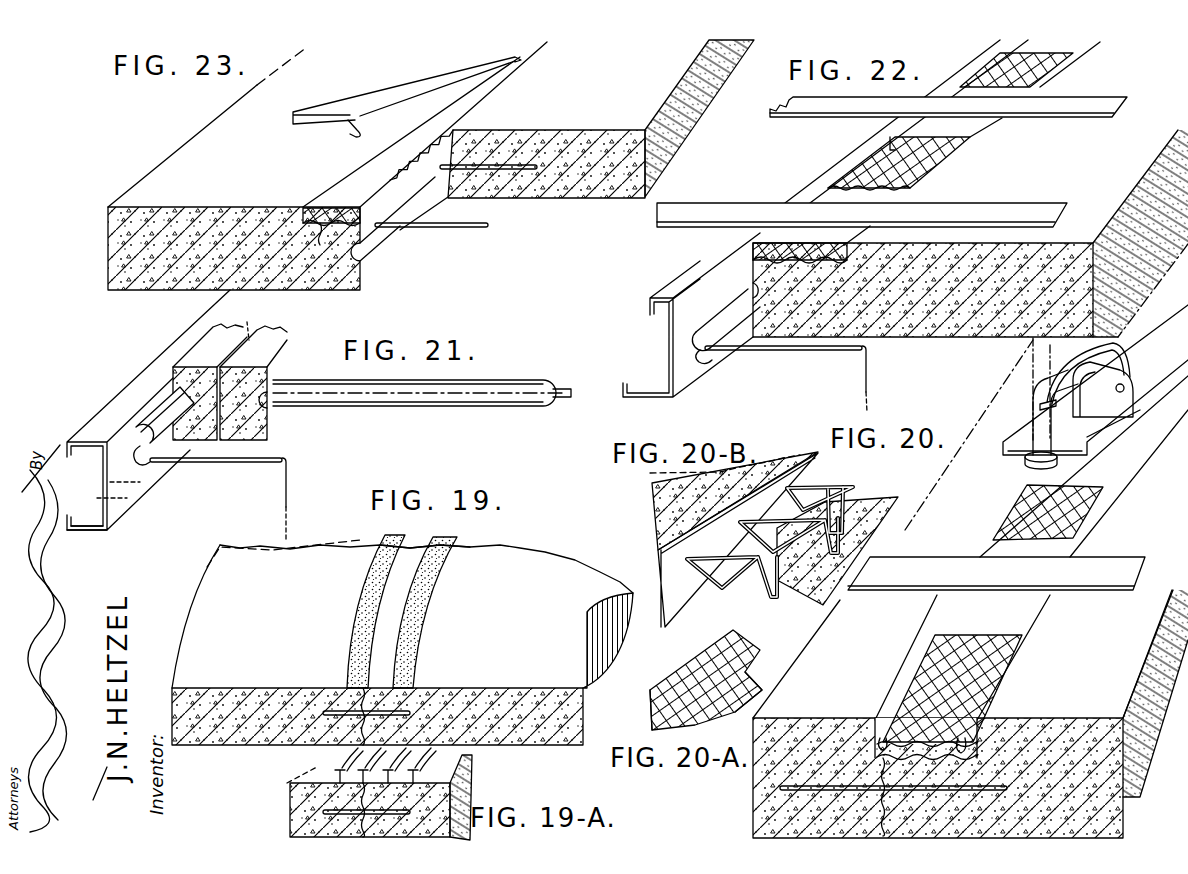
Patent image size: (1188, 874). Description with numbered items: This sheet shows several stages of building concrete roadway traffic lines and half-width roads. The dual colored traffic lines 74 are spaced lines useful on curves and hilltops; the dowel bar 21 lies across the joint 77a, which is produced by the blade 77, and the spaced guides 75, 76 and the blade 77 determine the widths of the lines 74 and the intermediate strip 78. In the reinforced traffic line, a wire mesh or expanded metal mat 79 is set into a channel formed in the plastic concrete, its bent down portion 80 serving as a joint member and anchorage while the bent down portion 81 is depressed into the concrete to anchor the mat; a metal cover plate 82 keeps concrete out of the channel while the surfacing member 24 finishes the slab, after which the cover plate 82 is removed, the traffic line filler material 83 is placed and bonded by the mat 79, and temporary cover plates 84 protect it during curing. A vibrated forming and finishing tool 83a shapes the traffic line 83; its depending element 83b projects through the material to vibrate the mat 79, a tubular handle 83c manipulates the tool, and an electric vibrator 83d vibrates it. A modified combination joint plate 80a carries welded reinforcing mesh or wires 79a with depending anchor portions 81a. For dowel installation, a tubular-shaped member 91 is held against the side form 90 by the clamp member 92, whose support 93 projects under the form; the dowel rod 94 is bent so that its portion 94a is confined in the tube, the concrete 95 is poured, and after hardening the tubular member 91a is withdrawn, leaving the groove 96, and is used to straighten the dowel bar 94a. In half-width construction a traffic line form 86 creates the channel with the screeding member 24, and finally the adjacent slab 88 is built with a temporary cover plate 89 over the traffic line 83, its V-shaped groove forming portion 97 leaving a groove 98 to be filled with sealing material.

In FIG. 19, the dowel bar 21 is at (410, 712).
In FIG. 20, the dowel bar 21 is at (990, 786).
In FIG. 22, the surfacing member 24 is at (787, 102).
In FIG. 20, the surfacing member 24 is at (895, 588).
In FIG. 19, the colored traffic lines 74 is at (360, 590).
In FIG. 19A, the guide 75 is at (340, 768).
In FIG. 19A, the guide 76 is at (453, 773).
In FIG. 19A, the blade 77 is at (290, 788).
In FIG. 19, the joint 77a is at (362, 703).
In FIG. 19, the strip 78 is at (393, 608).
In FIG. 23, the wire mesh or expanded metal mat 79 is at (303, 204).
In FIG. 22, the wire mesh or expanded metal mat 79 is at (943, 163).
In FIG. 20A, the wire mesh or expanded metal mat 79 is at (693, 664).
In FIG. 20, the wire mesh or expanded metal mat 79 is at (907, 708).
In FIG. 20B, the reinforcing mesh or wires 79a is at (815, 483).
In FIG. 20A, the bent down portion 80 is at (652, 710).
In FIG. 20, the bent down portion 80 is at (872, 752).
In FIG. 20B, the combination joint plate 80a is at (657, 560).
In FIG. 20A, the bent down portion 81 is at (730, 704).
In FIG. 20, the bent down portion 81 is at (968, 745).
In FIG. 20B, the depending anchor portions 81a is at (760, 597).
In FIG. 22, the metal cover plate 82 is at (913, 122).
In FIG. 20, the metal cover plate 82 is at (1027, 613).
In FIG. 23, the traffic line filler material 83 is at (338, 188).
In FIG. 22, the traffic line filler material 83 is at (1062, 53).
In FIG. 20, the traffic line filler material 83 is at (1110, 466).
In FIG. 20, the vibrated forming and finishing tool 83a is at (1036, 433).
In FIG. 20, the depending element 83b is at (1027, 462).
In FIG. 20, the tubular handle 83c is at (1055, 372).
In FIG. 20, the electric vibrator 83d is at (1130, 400).
In FIG. 20, the temporary cover plates 84 is at (1133, 334).
In FIG. 22, the traffic line form 86 is at (750, 233).
In FIG. 23, the adjacent slab 88 is at (587, 131).
In FIG. 23, the temporary cover plate 89 is at (350, 100).
In FIG. 21, the side form 90 is at (120, 407).
In FIG. 21, the tubular-shaped member 91 is at (170, 403).
In FIG. 21, the tubular member 91a is at (505, 378).
In FIG. 21, the clamp member 92 is at (163, 447).
In FIG. 21, the support 93 is at (117, 490).
In FIG. 21, the dowel rod 94 is at (248, 321).
In FIG. 23, the dowel rod portion 94a is at (510, 170).
In FIG. 21, the dowel rod portion 94a is at (565, 407).
In FIG. 21, the concrete 95 is at (197, 353).
In FIG. 23, the groove 96 is at (367, 244).
In FIG. 21, the groove 96 is at (267, 403).
In FIG. 23, the V-shaped groove forming portion 97 is at (352, 137).
In FIG. 23, the groove 98 is at (486, 92).